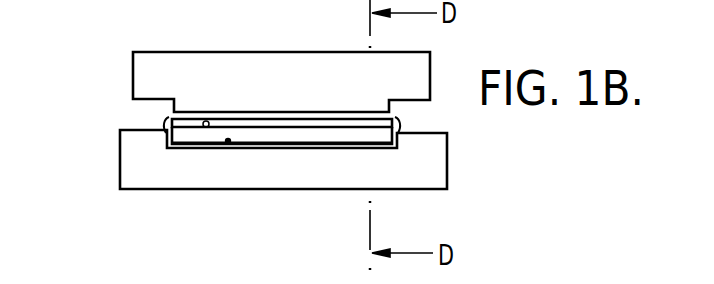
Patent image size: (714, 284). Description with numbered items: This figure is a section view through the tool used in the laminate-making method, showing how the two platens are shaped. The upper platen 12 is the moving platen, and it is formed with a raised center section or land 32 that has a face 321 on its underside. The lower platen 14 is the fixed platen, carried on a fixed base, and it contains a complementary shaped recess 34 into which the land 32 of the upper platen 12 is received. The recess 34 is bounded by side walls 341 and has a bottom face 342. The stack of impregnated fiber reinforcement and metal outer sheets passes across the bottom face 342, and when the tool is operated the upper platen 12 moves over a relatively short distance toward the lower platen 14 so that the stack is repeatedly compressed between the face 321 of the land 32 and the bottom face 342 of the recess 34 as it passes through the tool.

The upper platen 12 is at (367, 101).
The lower platen 14 is at (397, 166).
The land 32 is at (282, 107).
The face 321 is at (206, 121).
The recess 34 is at (318, 149).
The side walls 341 is at (165, 139).
The bottom face 342 is at (228, 144).